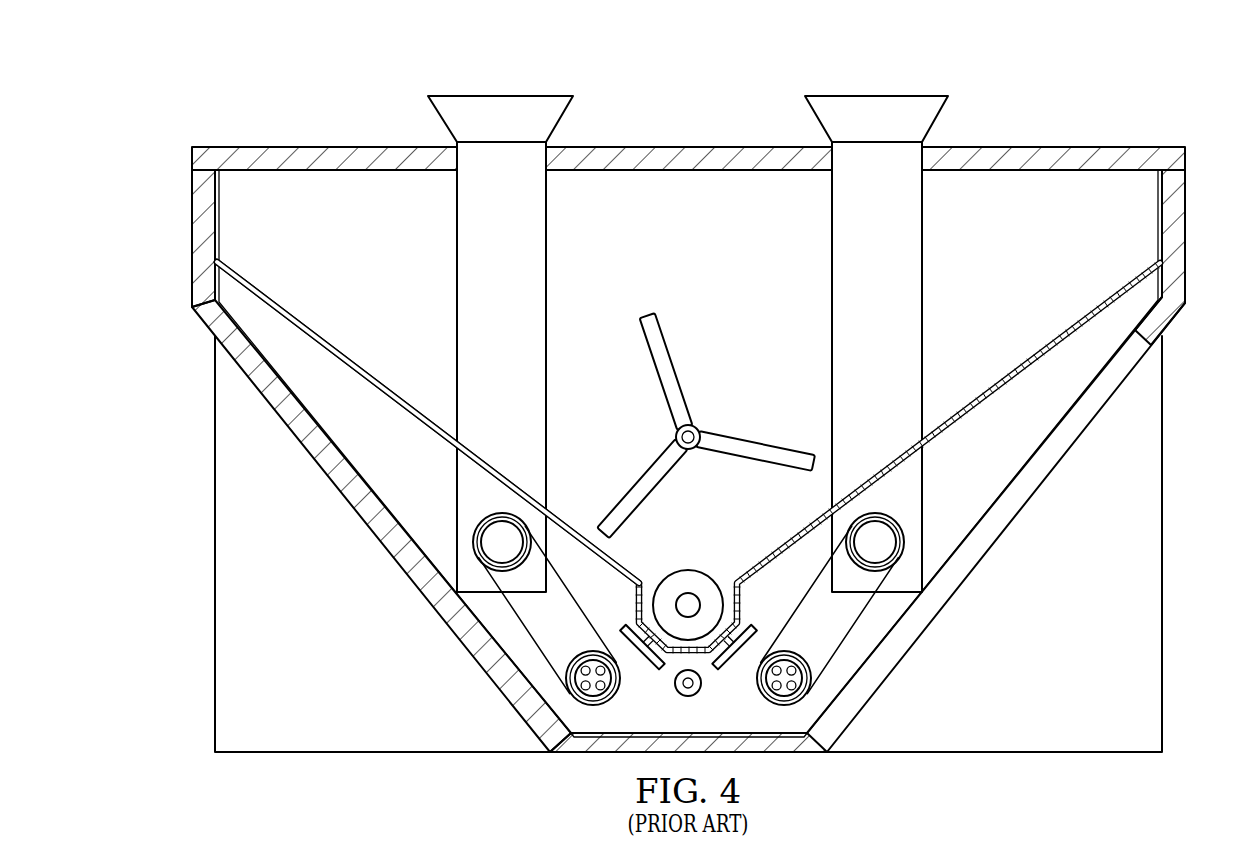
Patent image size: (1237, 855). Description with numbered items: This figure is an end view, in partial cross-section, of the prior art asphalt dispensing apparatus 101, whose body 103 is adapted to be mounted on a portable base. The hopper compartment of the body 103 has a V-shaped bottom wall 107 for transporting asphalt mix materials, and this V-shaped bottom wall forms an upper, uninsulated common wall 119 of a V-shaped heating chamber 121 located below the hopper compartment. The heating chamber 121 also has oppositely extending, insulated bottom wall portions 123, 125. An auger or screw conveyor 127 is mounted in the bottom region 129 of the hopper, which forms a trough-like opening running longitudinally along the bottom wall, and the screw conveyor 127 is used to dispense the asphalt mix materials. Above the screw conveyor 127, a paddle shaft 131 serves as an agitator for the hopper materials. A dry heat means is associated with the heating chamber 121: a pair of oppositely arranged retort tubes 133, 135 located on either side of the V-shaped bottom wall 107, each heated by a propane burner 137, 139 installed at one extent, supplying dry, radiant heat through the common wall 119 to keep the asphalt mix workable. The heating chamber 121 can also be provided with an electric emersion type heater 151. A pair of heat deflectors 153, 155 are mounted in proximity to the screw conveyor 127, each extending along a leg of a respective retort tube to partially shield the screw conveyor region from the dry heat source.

The asphalt dispensing apparatus 101 is at (297, 93).
The body 103 is at (1163, 540).
The V-shaped bottom wall 107 is at (1120, 287).
The common wall 119 is at (1058, 340).
The heating chamber 121 is at (326, 366).
The insulated bottom wall portion 123 is at (1020, 514).
The insulated bottom wall portion 125 is at (315, 455).
The screw conveyor 127 is at (679, 573).
The bottom region 129 is at (738, 578).
The paddle shaft 131 is at (674, 358).
The retort tube 133 is at (889, 538).
The retort tube 135 is at (488, 538).
The burner 137 is at (825, 660).
The burner 139 is at (552, 660).
The electric emersion type heater 151 is at (702, 691).
The heat deflector 153 is at (752, 633).
The heat deflector 155 is at (638, 668).